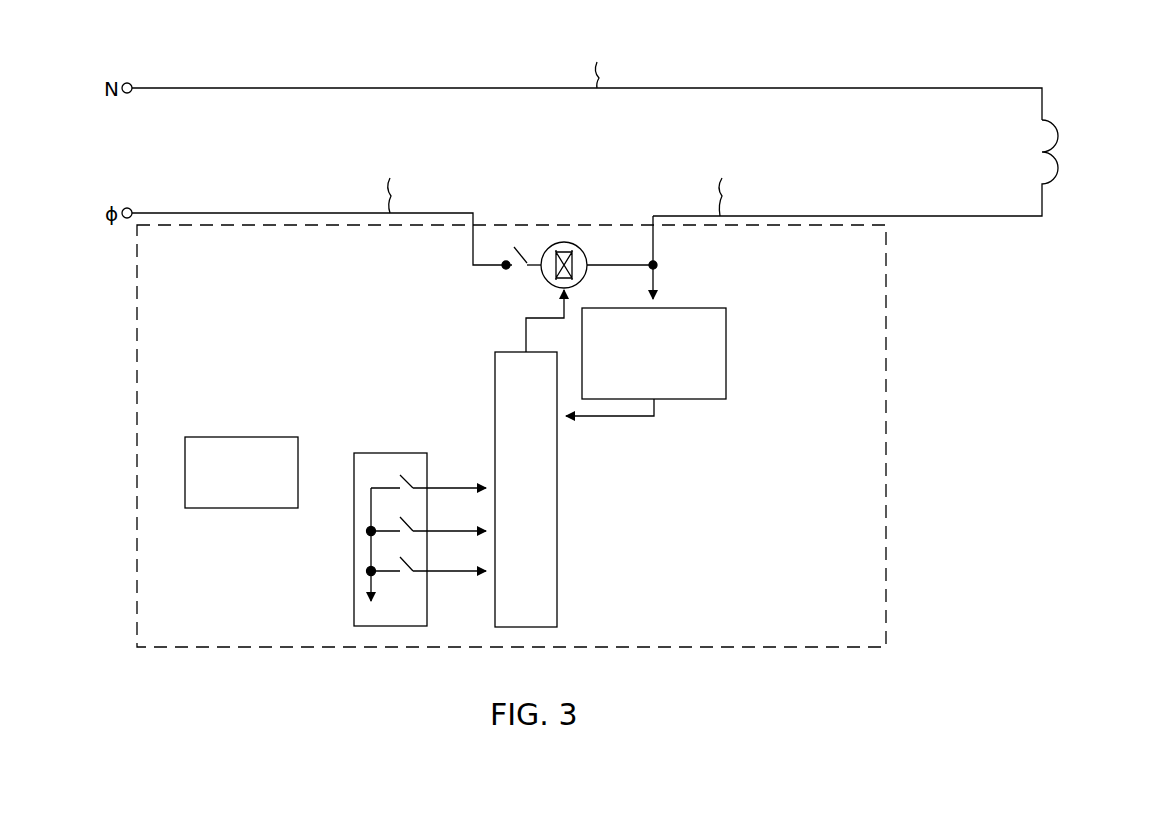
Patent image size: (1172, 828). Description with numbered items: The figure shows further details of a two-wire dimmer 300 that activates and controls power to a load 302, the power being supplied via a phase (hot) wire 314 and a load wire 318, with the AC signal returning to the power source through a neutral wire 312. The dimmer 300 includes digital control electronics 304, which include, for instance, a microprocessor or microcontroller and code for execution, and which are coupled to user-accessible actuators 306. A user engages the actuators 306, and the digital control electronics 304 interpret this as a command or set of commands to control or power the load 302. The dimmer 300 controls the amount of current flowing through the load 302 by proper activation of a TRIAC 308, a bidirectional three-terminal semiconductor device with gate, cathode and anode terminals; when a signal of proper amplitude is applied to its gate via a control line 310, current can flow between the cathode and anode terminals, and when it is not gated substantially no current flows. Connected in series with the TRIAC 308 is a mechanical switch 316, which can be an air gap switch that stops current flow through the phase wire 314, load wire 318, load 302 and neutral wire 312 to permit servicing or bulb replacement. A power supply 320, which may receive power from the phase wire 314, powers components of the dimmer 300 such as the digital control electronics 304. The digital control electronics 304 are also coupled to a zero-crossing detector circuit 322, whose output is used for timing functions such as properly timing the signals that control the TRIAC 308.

The dimmer 300 is at (886, 355).
The load 302 is at (1060, 128).
The digital control electronics 304 is at (557, 527).
The user-accessible actuators 306 is at (392, 453).
The TRIAC 308 is at (563, 242).
The control line 310 is at (526, 337).
The neutral wire 312 is at (308, 88).
The phase wire 314 is at (318, 213).
The mechanical switch 316 is at (487, 270).
The load wire 318 is at (805, 216).
The power supply 320 is at (204, 437).
The zero-crossing detector circuit 322 is at (727, 347).